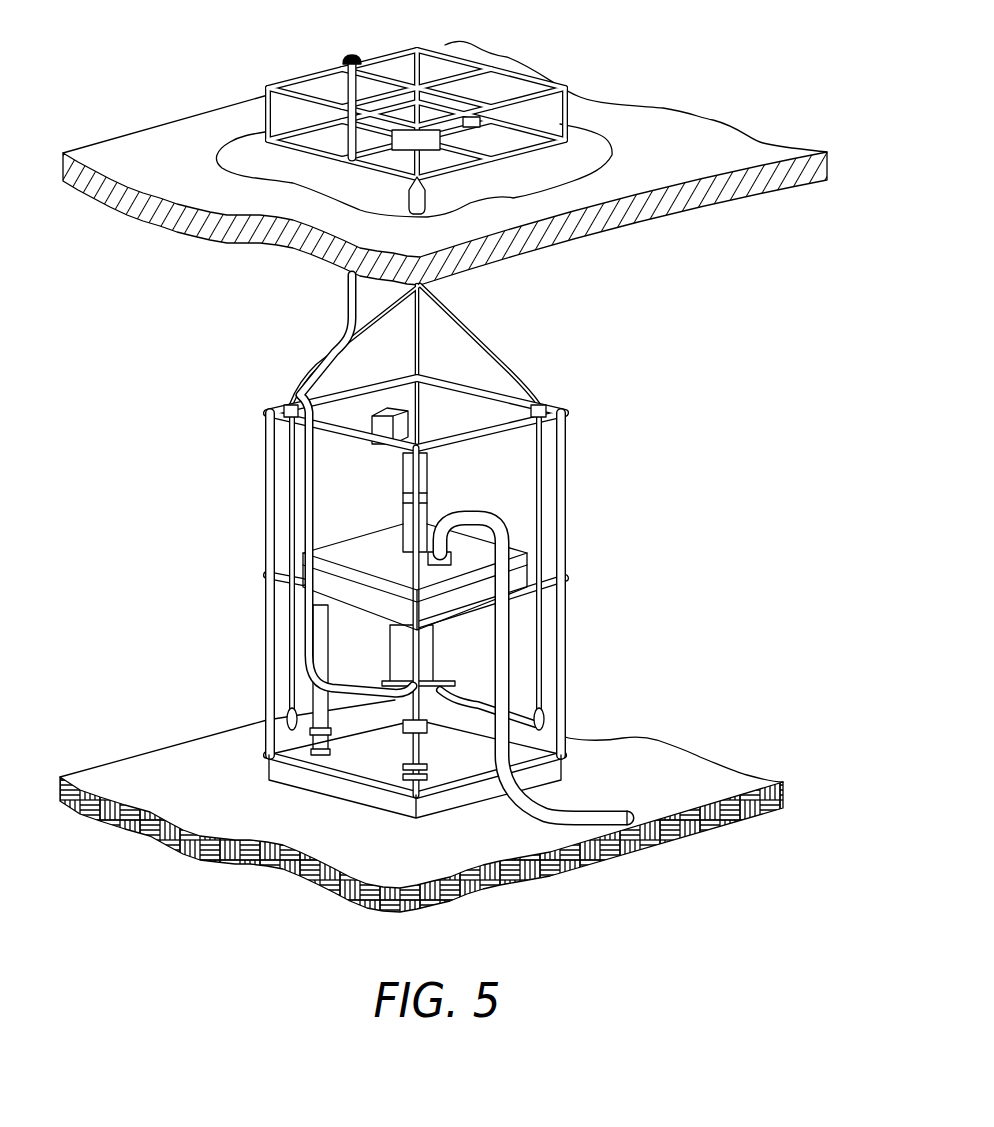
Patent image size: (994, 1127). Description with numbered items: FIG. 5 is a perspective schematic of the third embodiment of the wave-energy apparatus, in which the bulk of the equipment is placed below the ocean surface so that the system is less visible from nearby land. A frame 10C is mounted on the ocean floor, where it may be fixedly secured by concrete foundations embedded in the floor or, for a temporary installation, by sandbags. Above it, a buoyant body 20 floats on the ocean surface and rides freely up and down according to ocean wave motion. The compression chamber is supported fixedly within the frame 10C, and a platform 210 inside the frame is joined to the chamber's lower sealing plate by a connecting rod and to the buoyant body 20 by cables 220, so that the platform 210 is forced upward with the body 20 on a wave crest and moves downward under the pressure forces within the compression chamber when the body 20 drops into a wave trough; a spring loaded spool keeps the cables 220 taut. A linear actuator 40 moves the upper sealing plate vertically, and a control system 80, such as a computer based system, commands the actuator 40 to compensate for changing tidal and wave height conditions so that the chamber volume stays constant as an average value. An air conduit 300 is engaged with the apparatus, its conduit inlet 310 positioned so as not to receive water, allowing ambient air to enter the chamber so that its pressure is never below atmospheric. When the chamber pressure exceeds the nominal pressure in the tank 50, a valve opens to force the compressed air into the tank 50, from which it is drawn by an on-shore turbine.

The buoyant body 20 is at (593, 143).
The conduit inlet 310 is at (350, 61).
The air conduit 300 is at (343, 293).
The cables 220 is at (510, 362).
The control system 80 is at (372, 421).
The linear actuator 40 is at (428, 503).
The tank 50 is at (515, 578).
The frame 10C is at (562, 660).
The platform 210 is at (370, 742).